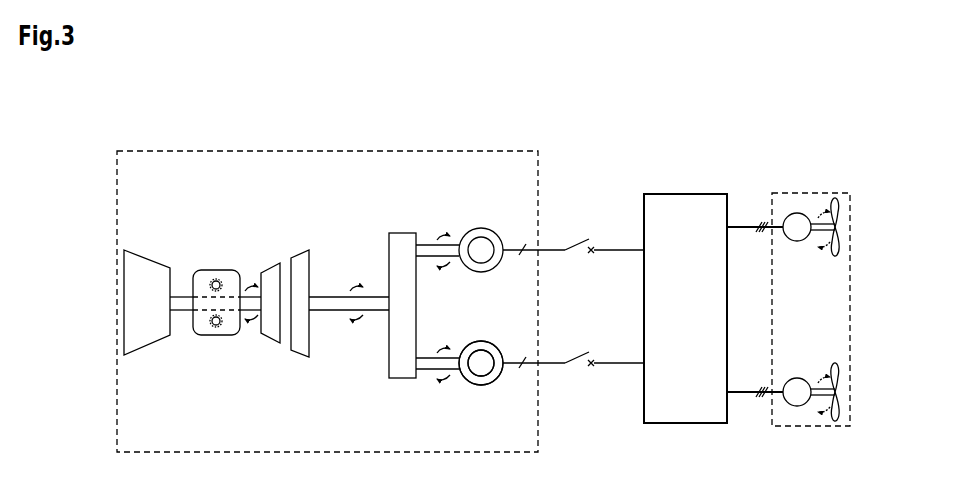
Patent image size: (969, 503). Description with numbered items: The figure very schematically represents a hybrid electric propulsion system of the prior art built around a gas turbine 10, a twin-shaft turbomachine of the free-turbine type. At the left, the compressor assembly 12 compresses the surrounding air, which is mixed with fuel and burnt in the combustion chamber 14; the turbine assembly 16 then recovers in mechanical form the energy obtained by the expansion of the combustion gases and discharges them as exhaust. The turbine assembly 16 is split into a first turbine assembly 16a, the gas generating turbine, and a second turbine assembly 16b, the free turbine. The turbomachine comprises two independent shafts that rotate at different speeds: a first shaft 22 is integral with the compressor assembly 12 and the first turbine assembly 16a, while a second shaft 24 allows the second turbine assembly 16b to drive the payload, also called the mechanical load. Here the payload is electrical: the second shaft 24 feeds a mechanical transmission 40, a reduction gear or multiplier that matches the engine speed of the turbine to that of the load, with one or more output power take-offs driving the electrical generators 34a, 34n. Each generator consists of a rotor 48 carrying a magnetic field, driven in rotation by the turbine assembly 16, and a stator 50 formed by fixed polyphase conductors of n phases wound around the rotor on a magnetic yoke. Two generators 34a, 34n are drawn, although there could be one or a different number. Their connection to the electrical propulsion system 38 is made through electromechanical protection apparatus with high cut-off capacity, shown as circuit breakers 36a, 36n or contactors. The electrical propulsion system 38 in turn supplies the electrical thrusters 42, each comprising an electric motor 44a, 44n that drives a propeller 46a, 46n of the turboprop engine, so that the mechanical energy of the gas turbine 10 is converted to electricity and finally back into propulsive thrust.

The gas turbine 10 is at (190, 148).
The compressor assembly 12 is at (133, 325).
The combustion chamber 14 is at (215, 337).
The turbine assembly 16 is at (283, 310).
The first turbine assembly 16a is at (270, 345).
The second turbine assembly 16b is at (300, 358).
The first shaft 22 is at (186, 296).
The second shaft 24 is at (328, 305).
The electrical generator 34a is at (492, 218).
The electrical generator 34n is at (501, 399).
The circuit breaker 36a is at (589, 227).
The circuit breaker 36n is at (593, 377).
The electrical propulsion system 38 is at (685, 194).
The mechanical transmission 40 is at (398, 230).
The electrical thrusters 42 is at (806, 190).
The electric motor 44a is at (798, 242).
The electric motor 44n is at (798, 407).
The propeller 46a is at (848, 246).
The propeller 46n is at (848, 411).
The rotor 48 is at (465, 379).
The stator 50 is at (480, 389).